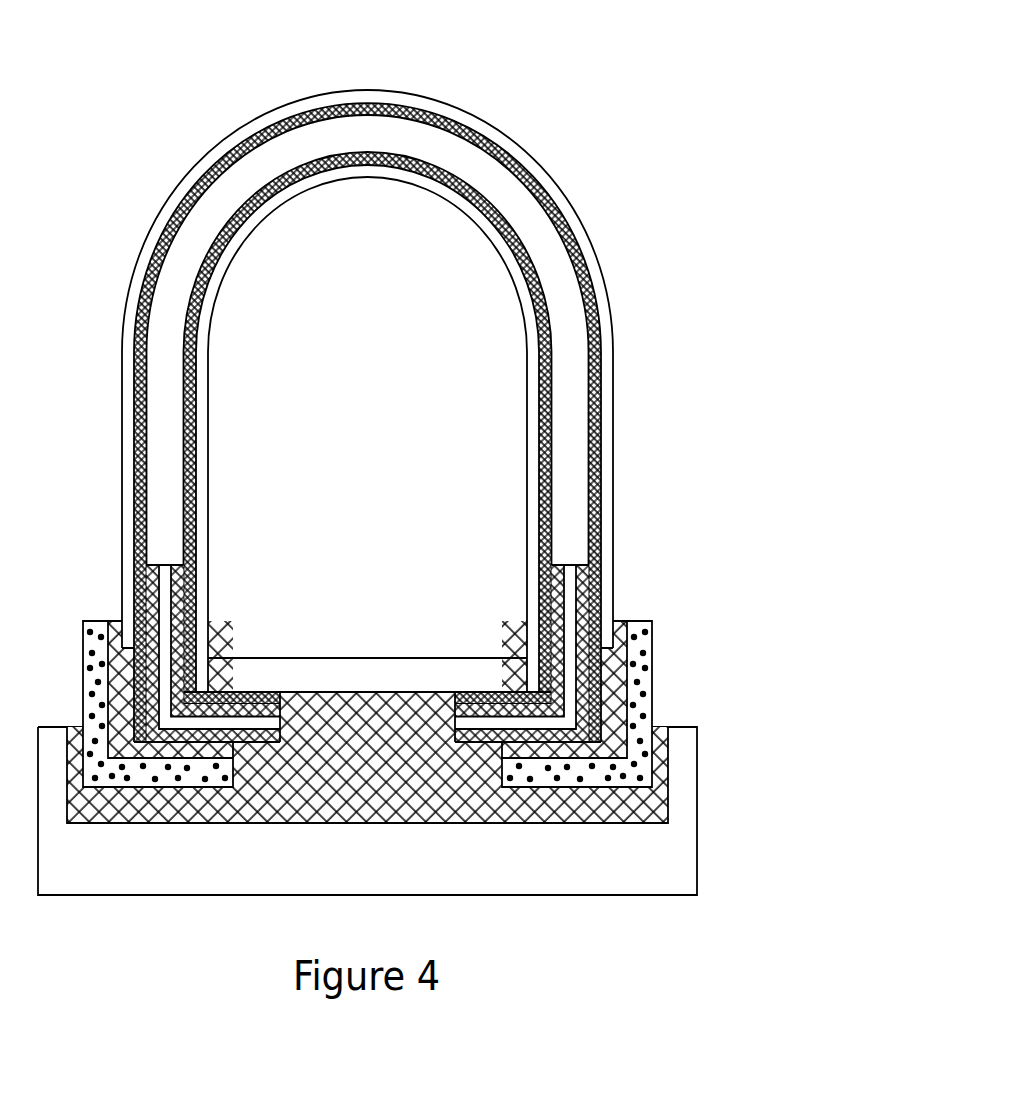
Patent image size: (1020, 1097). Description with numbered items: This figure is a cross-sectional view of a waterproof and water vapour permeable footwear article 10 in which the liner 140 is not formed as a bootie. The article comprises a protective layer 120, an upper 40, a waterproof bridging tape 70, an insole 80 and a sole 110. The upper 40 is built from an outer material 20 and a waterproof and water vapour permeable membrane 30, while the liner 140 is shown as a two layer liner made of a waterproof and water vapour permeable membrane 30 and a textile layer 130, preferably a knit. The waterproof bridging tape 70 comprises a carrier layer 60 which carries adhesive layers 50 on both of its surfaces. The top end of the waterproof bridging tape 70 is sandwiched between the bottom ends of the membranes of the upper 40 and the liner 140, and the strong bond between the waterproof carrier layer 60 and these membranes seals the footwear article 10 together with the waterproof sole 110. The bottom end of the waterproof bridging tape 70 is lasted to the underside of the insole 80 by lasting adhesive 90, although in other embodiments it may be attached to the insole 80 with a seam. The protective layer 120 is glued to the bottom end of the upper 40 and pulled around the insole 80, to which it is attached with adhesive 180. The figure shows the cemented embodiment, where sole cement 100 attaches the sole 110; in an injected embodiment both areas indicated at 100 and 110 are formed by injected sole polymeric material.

The waterproof and water vapour permeable footwear article 10 is at (612, 56).
The outer material 20 is at (567, 222).
The waterproof and water vapour permeable membrane 30 is at (572, 263).
The upper 40 is at (424, 416).
The adhesive layer 50 is at (456, 735).
The carrier layer 60 is at (463, 723).
The waterproof bridging tape 70 is at (368, 647).
The insole 80 is at (314, 675).
The lasting adhesive 90 is at (238, 697).
The sole cement 100 is at (652, 803).
The sole 110 is at (665, 863).
The protective layer 120 is at (640, 686).
The textile layer 130 is at (202, 368).
The liner 140 is at (368, 428).
The adhesive 180 is at (648, 641).